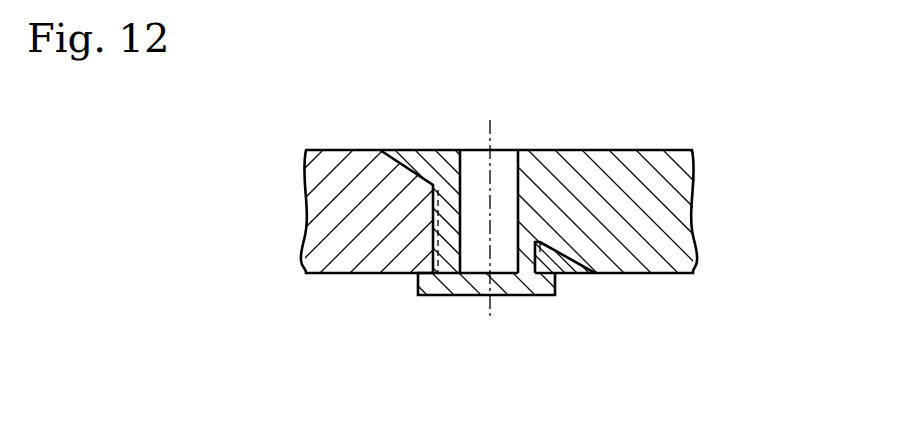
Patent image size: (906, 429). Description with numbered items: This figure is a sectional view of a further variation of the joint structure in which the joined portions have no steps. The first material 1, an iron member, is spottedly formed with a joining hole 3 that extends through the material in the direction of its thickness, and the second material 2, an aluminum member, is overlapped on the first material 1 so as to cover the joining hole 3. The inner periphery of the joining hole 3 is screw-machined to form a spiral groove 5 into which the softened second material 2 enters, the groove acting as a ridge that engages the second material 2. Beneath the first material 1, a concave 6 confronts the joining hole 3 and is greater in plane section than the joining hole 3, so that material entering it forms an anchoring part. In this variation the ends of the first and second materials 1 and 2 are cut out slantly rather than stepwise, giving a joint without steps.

The first material 1 is at (350, 209).
The second material 2 is at (673, 190).
The joining hole 3 is at (447, 250).
The groove 5 is at (535, 257).
The concave 6 is at (560, 292).